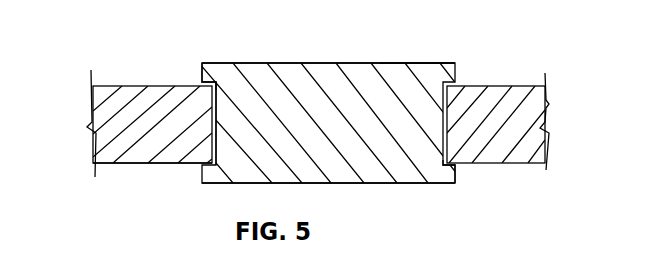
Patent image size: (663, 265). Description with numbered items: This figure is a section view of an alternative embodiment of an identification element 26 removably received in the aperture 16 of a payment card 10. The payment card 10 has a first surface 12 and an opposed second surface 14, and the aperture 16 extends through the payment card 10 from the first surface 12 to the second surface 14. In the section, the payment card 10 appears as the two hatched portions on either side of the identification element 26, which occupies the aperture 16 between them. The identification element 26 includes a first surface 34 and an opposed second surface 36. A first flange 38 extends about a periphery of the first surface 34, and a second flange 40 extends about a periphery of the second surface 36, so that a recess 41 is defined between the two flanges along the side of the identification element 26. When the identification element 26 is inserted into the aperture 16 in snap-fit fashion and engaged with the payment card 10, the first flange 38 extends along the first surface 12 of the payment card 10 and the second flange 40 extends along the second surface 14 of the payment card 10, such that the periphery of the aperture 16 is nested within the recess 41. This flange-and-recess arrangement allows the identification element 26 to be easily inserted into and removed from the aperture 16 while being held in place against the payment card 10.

The payment card 10 is at (538, 168).
The first surface 12 is at (112, 87).
The second surface 14 is at (113, 163).
The aperture 16 is at (218, 112).
The identification element 26 is at (418, 72).
The first surface 34 is at (392, 63).
The second surface 36 is at (408, 183).
The first flange 38 is at (208, 78).
The second flange 40 is at (453, 176).
The recess 41 is at (210, 88).